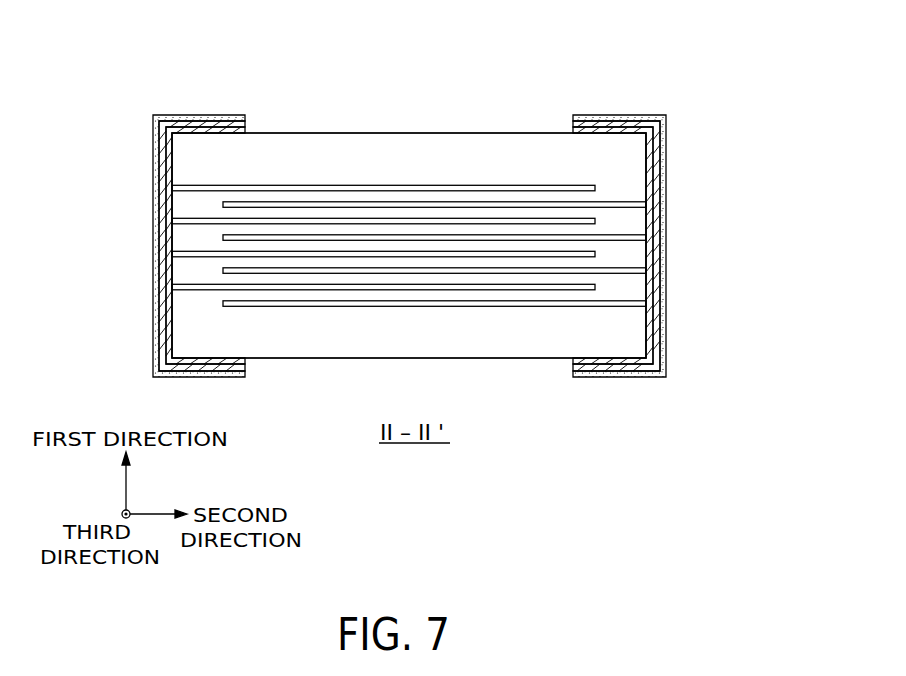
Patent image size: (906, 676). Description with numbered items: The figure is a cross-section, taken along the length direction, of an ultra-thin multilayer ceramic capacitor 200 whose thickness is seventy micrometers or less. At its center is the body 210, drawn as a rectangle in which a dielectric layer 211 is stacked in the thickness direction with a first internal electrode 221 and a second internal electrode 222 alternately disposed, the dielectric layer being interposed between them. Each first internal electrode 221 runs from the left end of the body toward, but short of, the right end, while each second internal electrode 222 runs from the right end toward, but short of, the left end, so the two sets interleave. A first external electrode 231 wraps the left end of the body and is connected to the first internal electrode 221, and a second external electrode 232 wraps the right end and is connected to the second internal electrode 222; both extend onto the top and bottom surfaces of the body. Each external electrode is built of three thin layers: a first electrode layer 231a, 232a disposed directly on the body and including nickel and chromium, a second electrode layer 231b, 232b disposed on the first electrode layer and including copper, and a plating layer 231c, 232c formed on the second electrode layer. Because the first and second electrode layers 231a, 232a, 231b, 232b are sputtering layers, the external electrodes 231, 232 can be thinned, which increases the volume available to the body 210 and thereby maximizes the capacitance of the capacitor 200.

The multilayer ceramic capacitor 200 is at (148, 30).
The body 210 is at (527, 133).
The dielectric layer 211 is at (330, 197).
The first internal electrode 221 is at (399, 186).
The second internal electrode 222 is at (461, 202).
The first external electrode 231 is at (62, 178).
The first electrode layer 231a is at (167, 234).
The second electrode layer 231b is at (160, 210).
The plating layer 231c is at (153, 182).
The second external electrode 232 is at (756, 179).
The first electrode layer 232a is at (653, 236).
The second electrode layer 232b is at (660, 210).
The plating layer 232c is at (666, 182).